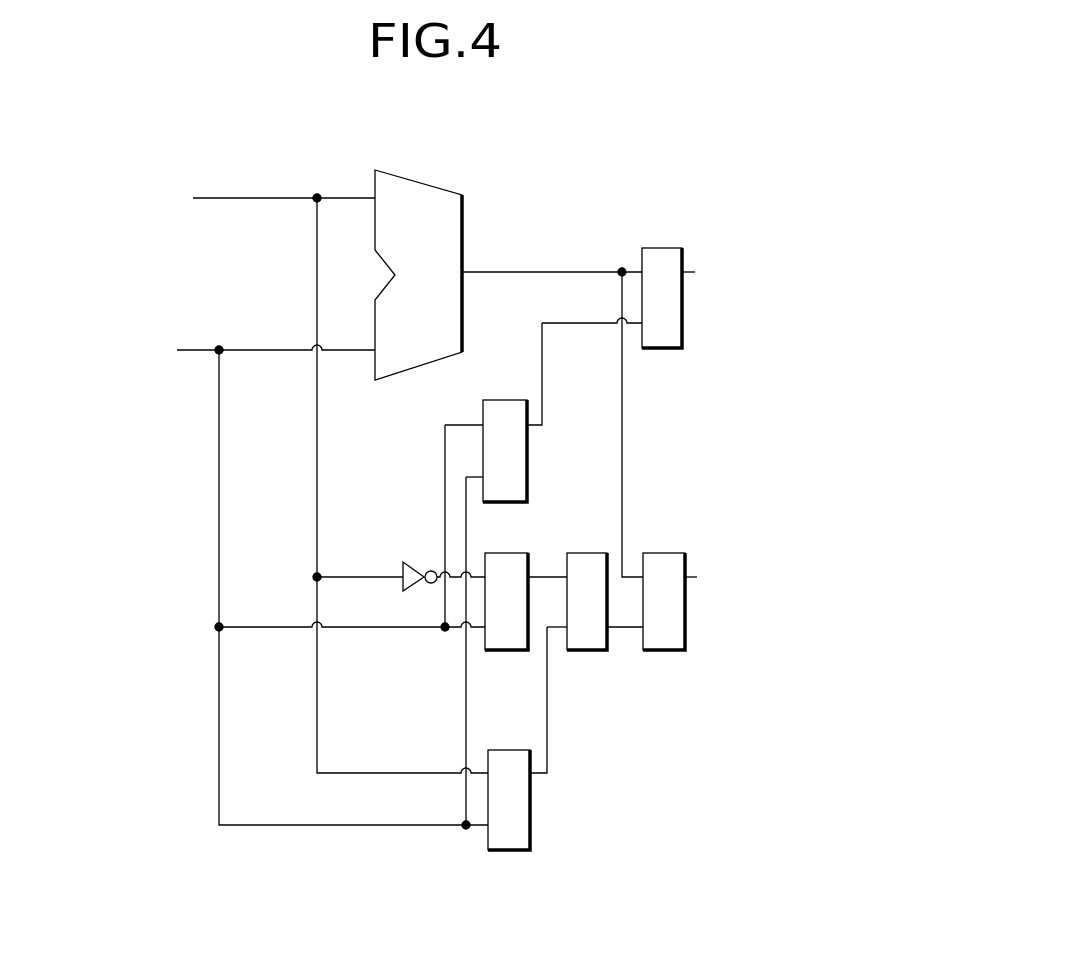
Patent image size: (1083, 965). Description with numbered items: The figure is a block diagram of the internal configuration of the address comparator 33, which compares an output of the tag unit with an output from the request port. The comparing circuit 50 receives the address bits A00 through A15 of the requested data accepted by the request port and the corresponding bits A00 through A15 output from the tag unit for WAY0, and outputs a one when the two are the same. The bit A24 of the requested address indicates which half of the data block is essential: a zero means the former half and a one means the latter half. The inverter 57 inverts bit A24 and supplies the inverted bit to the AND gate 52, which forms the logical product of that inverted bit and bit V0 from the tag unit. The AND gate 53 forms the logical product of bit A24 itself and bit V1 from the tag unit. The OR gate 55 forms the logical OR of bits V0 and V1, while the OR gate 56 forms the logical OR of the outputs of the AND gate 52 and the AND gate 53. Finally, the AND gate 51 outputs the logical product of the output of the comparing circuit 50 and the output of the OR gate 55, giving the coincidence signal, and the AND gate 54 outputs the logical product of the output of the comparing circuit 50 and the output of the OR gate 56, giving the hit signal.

The address comparator 33 is at (485, 495).
The comparing circuit 50 is at (462, 220).
The AND gate 51 is at (655, 248).
The AND gate 52 is at (500, 650).
The AND gate 53 is at (508, 850).
The AND gate 54 is at (665, 553).
The OR gate 55 is at (527, 490).
The OR gate 56 is at (582, 650).
The inverter 57 is at (410, 590).